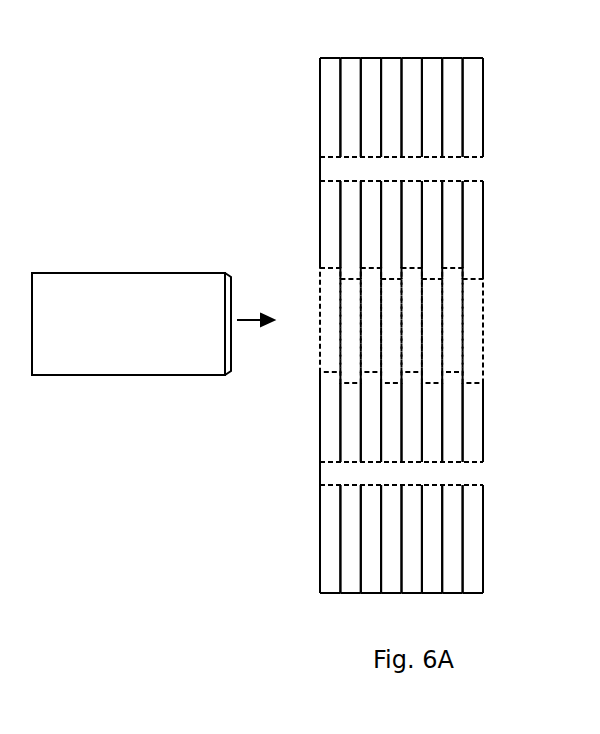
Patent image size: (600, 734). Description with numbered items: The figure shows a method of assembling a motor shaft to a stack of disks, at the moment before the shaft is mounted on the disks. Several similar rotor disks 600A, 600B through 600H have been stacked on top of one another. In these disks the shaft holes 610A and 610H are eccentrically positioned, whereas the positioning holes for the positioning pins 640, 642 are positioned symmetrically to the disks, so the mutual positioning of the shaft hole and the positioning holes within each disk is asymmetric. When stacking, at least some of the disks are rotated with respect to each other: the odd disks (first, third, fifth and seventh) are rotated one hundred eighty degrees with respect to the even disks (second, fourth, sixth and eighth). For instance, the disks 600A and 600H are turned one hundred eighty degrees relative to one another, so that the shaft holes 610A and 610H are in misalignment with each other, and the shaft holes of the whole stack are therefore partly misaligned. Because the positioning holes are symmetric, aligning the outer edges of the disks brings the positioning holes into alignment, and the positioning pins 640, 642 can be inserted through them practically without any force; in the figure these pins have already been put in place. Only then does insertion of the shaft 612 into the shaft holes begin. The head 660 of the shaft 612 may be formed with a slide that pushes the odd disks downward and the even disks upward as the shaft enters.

The rotor disk 600A is at (330, 57).
The rotor disk 600B is at (349, 57).
The rotor disk 600H is at (473, 57).
The shaft hole 610A is at (321, 336).
The shaft hole 610H is at (485, 343).
The positioning pin 640 is at (332, 170).
The positioning pin 642 is at (332, 475).
The shaft 612 is at (158, 340).
The head of the shaft 660 is at (231, 275).